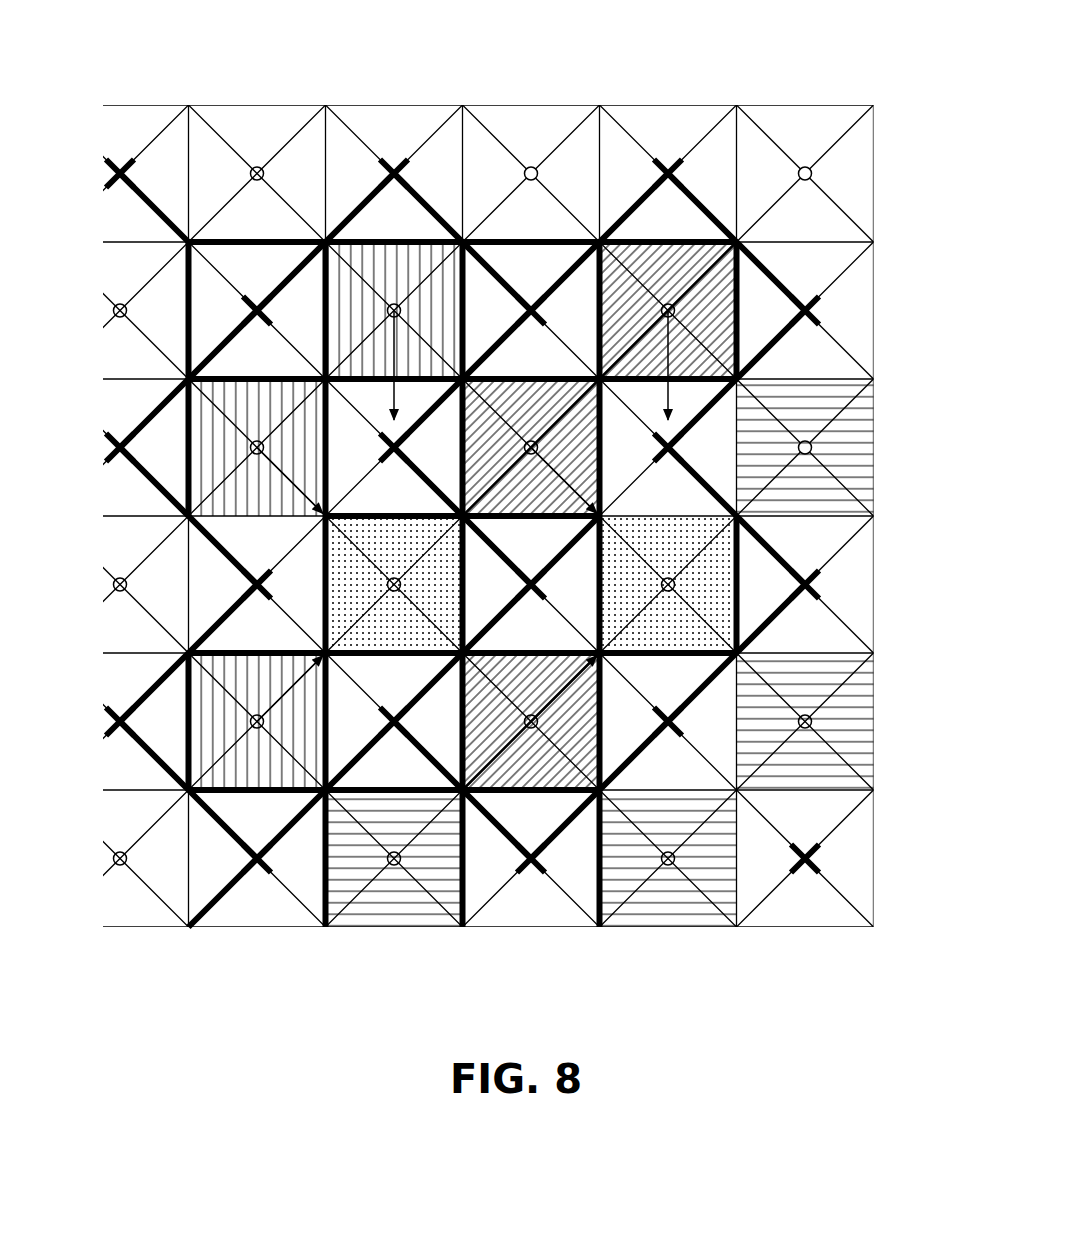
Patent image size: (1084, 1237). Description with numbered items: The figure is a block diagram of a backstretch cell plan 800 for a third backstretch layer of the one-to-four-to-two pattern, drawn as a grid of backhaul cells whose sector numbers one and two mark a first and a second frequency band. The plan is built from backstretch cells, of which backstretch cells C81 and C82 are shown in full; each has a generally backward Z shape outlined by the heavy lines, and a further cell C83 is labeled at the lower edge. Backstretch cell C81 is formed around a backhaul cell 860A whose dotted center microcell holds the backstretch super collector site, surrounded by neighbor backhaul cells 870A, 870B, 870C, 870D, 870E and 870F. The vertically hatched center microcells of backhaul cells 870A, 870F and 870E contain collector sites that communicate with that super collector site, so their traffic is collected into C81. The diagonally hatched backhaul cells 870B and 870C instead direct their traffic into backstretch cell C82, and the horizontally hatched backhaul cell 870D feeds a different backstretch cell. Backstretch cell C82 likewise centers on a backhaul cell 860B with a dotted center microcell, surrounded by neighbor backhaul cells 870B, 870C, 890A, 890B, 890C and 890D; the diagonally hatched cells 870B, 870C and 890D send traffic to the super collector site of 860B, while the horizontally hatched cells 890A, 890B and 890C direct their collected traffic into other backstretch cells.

The backstretch cell plan 800 is at (828, 46).
The neighbor backhaul cell 870A is at (398, 250).
The neighbor backhaul cell 870B is at (510, 387).
The neighbor backhaul cell 870C is at (570, 770).
The neighbor backhaul cell 870D is at (375, 895).
The neighbor backhaul cell 870E is at (225, 770).
The neighbor backhaul cell 870F is at (278, 378).
The neighbor backhaul cell 890A is at (707, 873).
The neighbor backhaul cell 890B is at (778, 778).
The neighbor backhaul cell 890C is at (848, 420).
The neighbor backhaul cell 890D is at (668, 250).
The backhaul cell 860A is at (405, 627).
The backhaul cell 860B is at (710, 563).
The backstretch cell C81 is at (283, 803).
The backstretch cell C82 is at (737, 660).
The contour line C83 is at (507, 893).